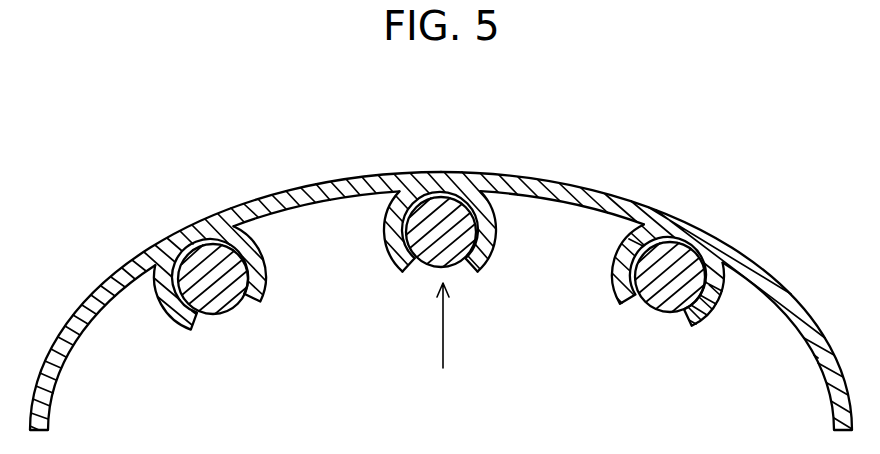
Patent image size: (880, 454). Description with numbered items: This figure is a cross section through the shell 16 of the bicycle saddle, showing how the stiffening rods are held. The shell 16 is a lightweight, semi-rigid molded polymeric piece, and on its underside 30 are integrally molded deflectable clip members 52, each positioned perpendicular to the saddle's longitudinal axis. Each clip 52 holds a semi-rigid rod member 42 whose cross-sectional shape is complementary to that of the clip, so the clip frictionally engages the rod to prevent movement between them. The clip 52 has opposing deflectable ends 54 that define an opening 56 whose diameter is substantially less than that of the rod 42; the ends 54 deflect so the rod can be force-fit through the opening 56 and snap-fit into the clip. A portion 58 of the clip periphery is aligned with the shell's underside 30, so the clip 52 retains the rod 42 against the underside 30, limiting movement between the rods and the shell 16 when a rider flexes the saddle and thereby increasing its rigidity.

The shell 16 is at (795, 325).
The underside of the shell 30 is at (60, 362).
The rod member 42 is at (453, 232).
The clip member 52 is at (382, 245).
The deflectable ends 54 is at (408, 274).
The opening 56 is at (443, 344).
The portion of the clip periphery 58 is at (447, 194).